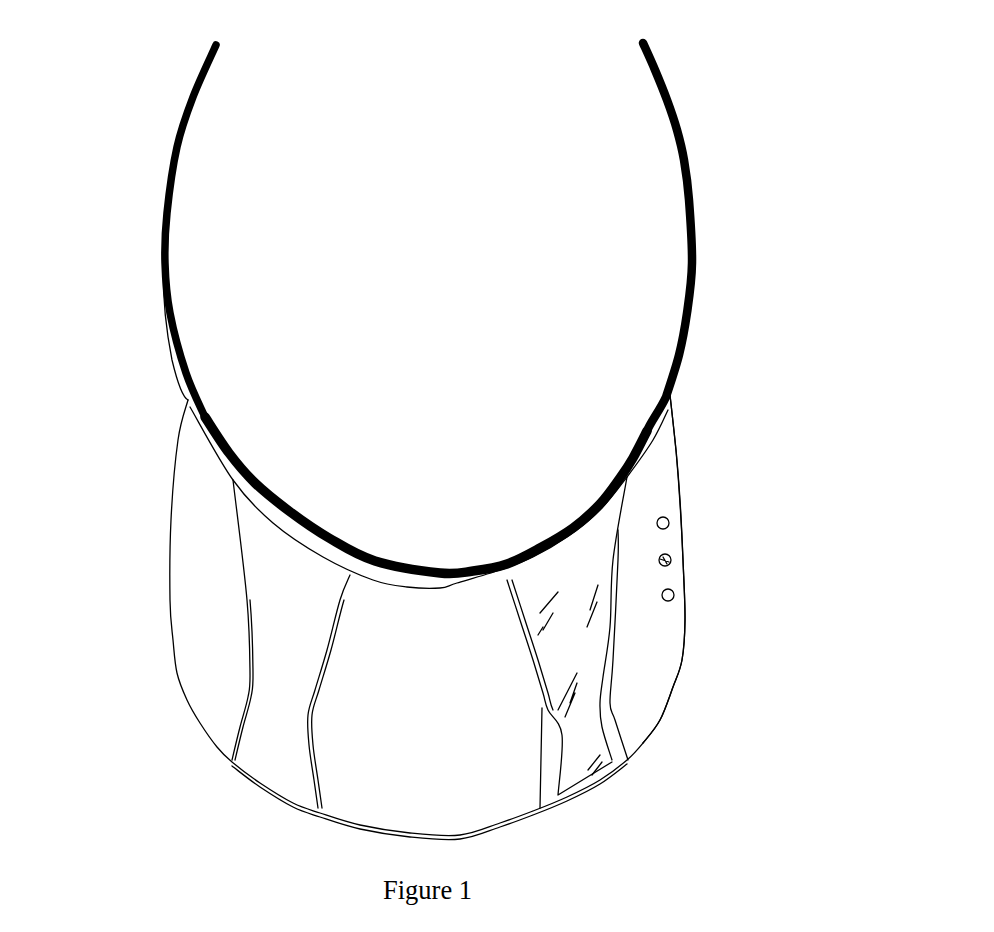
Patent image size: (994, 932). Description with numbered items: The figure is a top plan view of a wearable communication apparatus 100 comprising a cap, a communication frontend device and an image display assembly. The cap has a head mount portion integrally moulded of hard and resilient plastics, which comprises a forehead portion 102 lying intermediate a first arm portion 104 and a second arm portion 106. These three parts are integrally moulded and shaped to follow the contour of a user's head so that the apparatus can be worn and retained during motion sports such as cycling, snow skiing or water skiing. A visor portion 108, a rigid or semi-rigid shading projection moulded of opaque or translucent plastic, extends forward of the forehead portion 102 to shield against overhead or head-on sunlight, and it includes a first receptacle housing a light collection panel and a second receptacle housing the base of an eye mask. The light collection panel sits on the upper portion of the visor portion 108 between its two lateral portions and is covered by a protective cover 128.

The wearable communication apparatus 100 is at (451, 441).
The forehead portion 102 is at (397, 568).
The first arm portion 104 is at (672, 110).
The second arm portion 106 is at (180, 108).
The visor portion 108 is at (648, 659).
The protective cover 128 is at (575, 752).